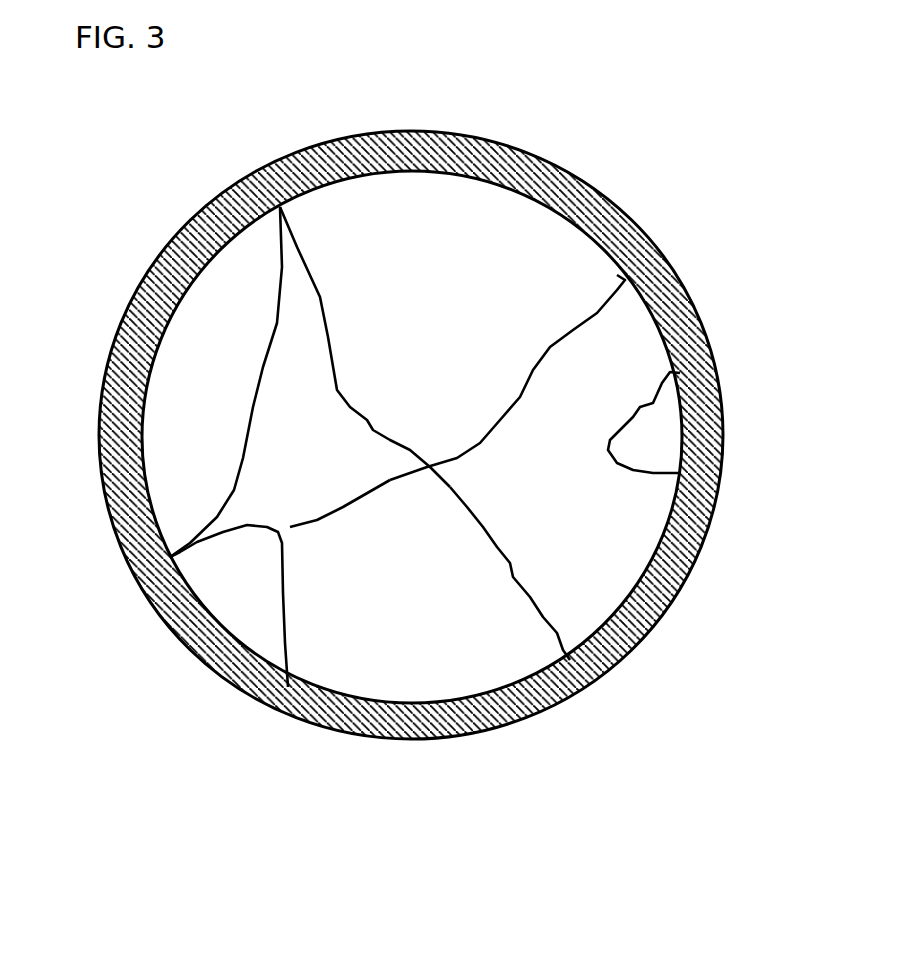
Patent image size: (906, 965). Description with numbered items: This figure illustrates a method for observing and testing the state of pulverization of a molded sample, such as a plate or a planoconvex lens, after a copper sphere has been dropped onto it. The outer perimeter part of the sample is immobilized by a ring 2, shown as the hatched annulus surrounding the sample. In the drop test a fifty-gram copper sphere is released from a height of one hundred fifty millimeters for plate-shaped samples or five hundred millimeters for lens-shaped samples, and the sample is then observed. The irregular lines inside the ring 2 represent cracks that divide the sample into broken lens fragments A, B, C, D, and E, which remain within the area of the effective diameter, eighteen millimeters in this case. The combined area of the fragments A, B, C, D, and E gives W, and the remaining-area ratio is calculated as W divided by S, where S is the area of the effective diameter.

The ring 2 is at (627, 643).
The broken lens fragment A is at (580, 242).
The broken lens fragment B is at (163, 402).
The broken lens fragment C is at (227, 613).
The broken lens fragment D is at (427, 683).
The broken lens fragment E is at (667, 432).